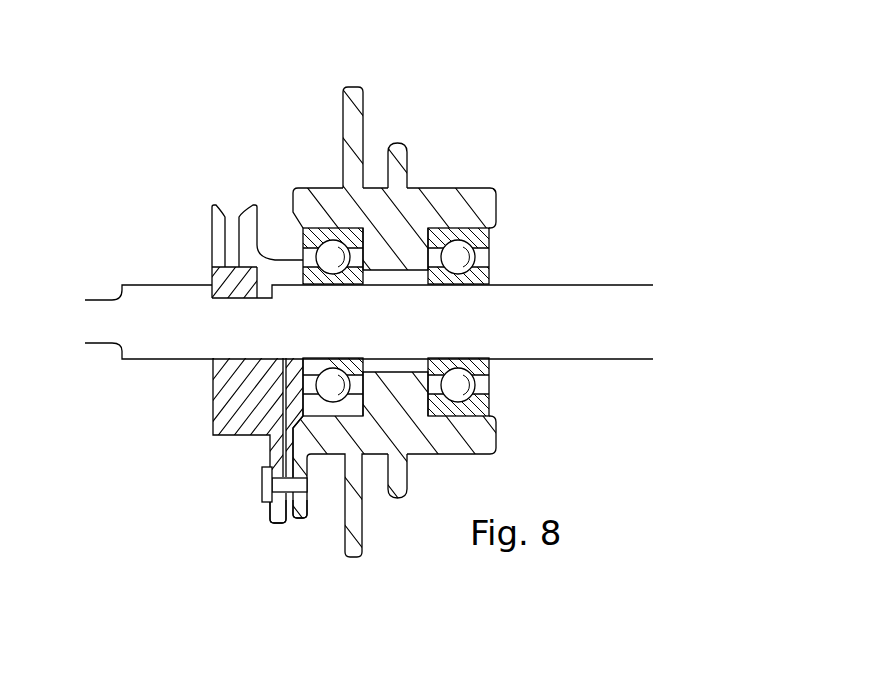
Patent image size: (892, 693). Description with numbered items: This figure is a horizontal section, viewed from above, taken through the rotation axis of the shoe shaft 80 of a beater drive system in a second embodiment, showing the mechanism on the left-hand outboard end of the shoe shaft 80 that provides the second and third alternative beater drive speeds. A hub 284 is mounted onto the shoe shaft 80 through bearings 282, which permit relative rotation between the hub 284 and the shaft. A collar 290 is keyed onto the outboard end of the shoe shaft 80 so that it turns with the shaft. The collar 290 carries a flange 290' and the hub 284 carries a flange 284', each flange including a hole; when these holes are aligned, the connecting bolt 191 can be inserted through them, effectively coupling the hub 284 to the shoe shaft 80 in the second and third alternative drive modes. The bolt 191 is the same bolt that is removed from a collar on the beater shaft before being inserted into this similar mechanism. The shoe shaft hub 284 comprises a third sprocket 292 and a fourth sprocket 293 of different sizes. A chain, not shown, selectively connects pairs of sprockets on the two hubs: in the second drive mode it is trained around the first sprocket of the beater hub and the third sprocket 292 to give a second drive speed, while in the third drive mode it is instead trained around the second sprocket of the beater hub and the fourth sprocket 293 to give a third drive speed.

The shoe shaft 80 is at (607, 302).
The bolt 191 is at (265, 488).
The bearings 282 is at (312, 240).
The hub 284 is at (446, 346).
The flange 284' is at (330, 563).
The collar 290 is at (316, 346).
The flange 290' is at (241, 562).
The third sprocket 292 is at (355, 97).
The fourth sprocket 293 is at (398, 163).